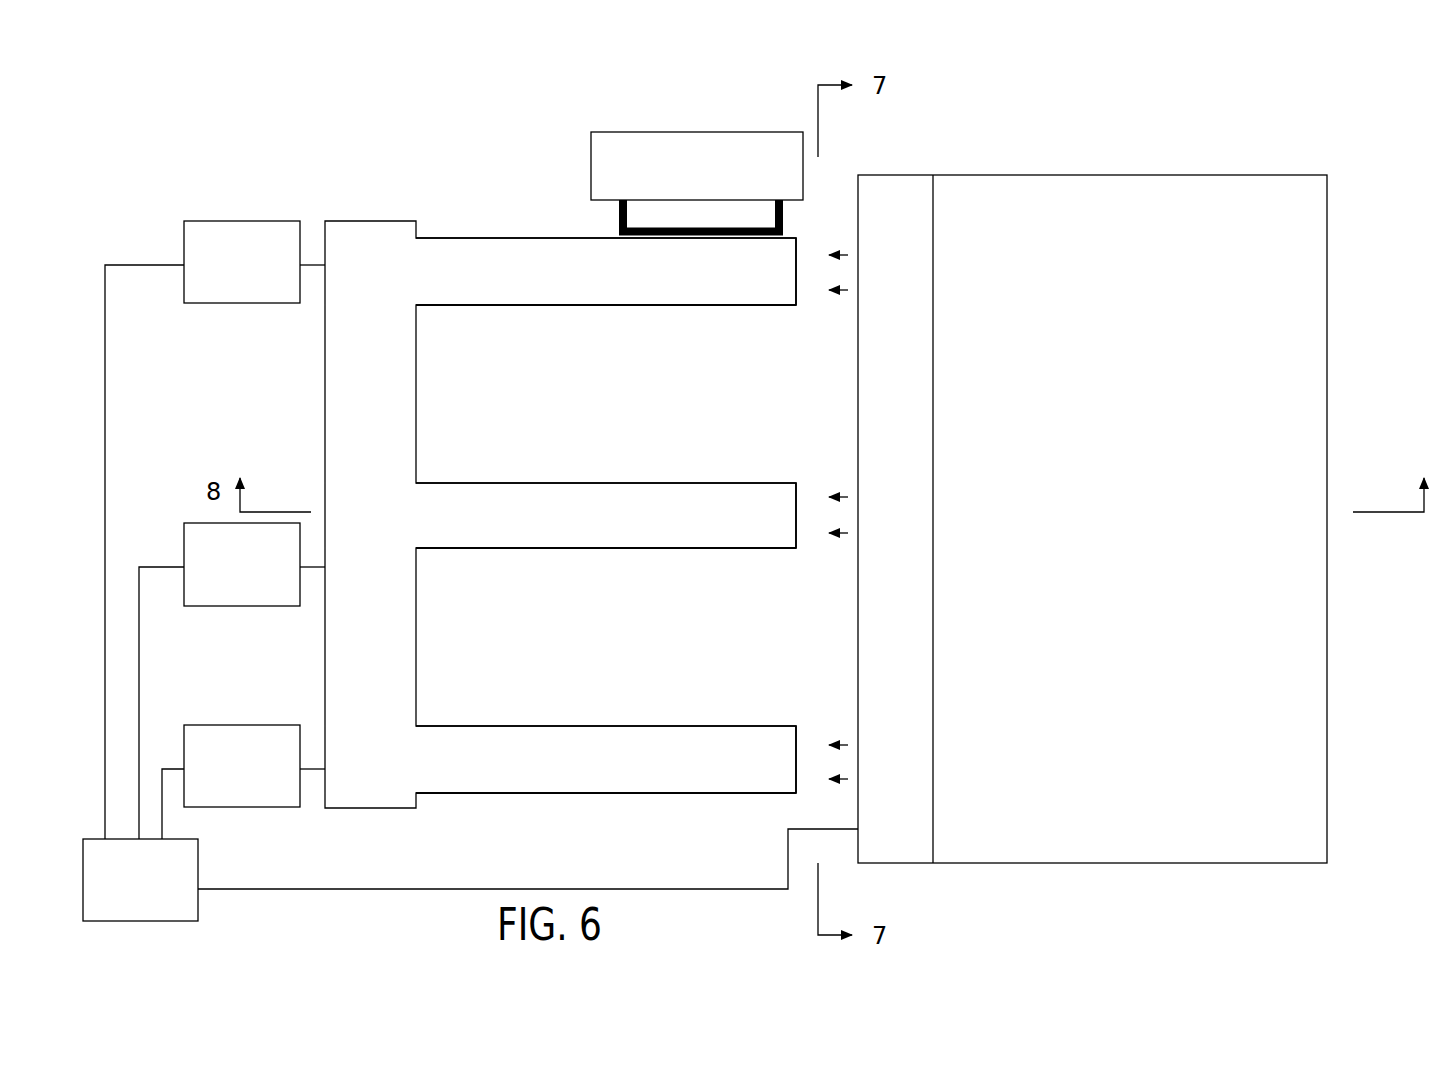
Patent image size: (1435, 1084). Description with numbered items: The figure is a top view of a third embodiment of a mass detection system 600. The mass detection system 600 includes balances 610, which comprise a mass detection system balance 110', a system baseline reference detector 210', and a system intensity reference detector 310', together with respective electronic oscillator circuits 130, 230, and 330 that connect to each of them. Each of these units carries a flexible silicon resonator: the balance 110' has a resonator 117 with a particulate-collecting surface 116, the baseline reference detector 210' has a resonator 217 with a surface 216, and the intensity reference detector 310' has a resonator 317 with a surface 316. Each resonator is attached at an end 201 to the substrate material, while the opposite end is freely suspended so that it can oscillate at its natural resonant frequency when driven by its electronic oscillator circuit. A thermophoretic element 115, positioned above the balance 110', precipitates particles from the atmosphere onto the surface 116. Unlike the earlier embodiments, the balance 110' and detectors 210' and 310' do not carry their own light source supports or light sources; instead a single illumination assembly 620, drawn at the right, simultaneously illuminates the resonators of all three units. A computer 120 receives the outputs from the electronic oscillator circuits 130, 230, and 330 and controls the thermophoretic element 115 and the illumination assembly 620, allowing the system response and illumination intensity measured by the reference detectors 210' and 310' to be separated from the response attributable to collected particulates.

The mass detection system 600 is at (212, 92).
The balances 610 is at (374, 114).
The illumination assembly 620 is at (1105, 130).
The mass detection system balance 110' is at (594, 234).
The thermophoretic element 115 is at (618, 218).
The surface 116 is at (516, 288).
The resonator 117 is at (693, 306).
The computer 120 is at (162, 895).
The electronic oscillator circuit 130 is at (263, 279).
The end 201 is at (745, 132).
The system baseline reference detector 210' is at (606, 475).
The surface 216 is at (515, 533).
The resonator 217 is at (693, 549).
The electronic oscillator circuit 230 is at (264, 580).
The system intensity reference detector 310' is at (606, 723).
The surface 316 is at (516, 778).
The resonator 317 is at (693, 794).
The electronic oscillator circuit 330 is at (264, 782).